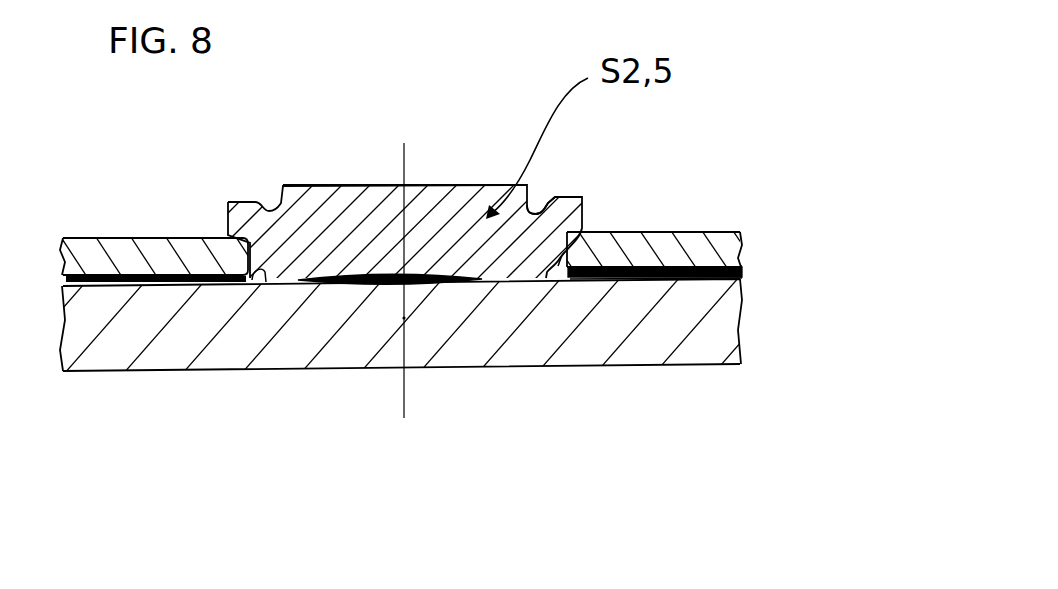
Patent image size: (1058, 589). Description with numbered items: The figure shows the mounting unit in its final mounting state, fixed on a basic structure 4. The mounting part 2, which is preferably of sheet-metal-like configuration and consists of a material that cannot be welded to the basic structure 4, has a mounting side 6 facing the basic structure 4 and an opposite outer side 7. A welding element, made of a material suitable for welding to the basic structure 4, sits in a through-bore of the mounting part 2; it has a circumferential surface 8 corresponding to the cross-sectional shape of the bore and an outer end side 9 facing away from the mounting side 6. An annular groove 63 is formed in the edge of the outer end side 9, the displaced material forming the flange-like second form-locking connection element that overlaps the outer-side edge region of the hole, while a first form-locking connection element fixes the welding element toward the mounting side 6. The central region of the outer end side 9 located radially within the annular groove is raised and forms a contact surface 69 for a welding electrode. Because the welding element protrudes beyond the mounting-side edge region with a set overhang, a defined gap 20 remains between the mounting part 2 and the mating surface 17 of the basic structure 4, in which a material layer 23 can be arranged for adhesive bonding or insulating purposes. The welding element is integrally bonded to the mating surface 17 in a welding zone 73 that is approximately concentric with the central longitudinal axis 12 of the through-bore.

The mounting part 2 is at (710, 254).
The basic structure 4 is at (722, 332).
The mounting side 6 is at (663, 278).
The outer side 7 is at (657, 232).
The circumferential surface 8 is at (578, 244).
The outer end side 9 is at (450, 187).
The central longitudinal axis 12 is at (403, 318).
The mating surface 17 is at (138, 282).
The gap 20 is at (745, 271).
The material layer 23 is at (637, 278).
The annular groove 63 is at (538, 203).
The contact surface 69 is at (332, 185).
The welding zone 73 is at (345, 283).